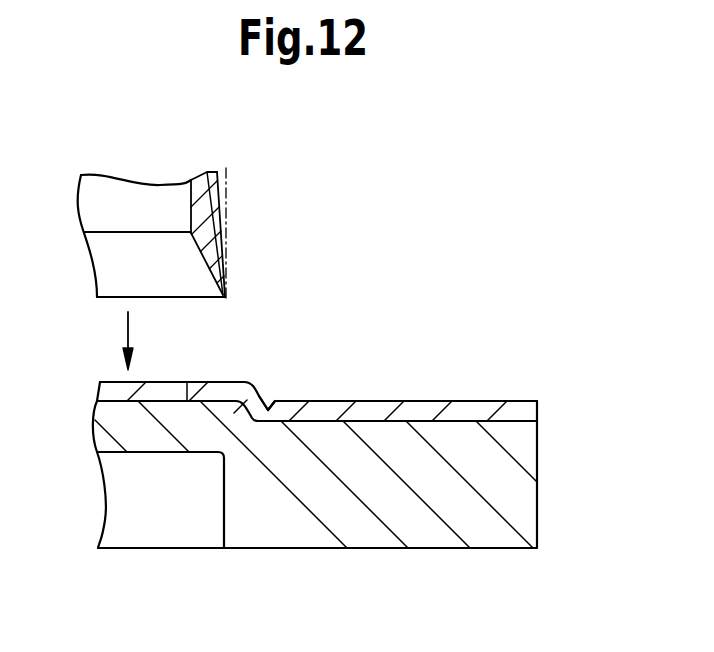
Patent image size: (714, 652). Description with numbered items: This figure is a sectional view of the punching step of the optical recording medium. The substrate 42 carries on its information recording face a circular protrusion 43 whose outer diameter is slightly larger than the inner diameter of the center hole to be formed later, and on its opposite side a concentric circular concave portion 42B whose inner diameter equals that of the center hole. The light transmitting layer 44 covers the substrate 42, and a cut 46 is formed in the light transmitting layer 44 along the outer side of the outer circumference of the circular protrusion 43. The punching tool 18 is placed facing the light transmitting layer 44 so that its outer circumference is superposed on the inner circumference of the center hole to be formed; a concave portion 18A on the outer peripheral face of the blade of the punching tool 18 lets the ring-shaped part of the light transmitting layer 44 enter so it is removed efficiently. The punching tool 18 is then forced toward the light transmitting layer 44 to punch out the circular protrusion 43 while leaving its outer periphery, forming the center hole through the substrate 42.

The punching tool 18 is at (242, 256).
The concave portion (recess) 18A is at (218, 201).
The substrate 42 is at (538, 467).
The circular concave portion 42B is at (224, 515).
The circular protrusion 43 is at (187, 382).
The light transmitting layer 44 is at (470, 401).
The cut 46 is at (268, 397).